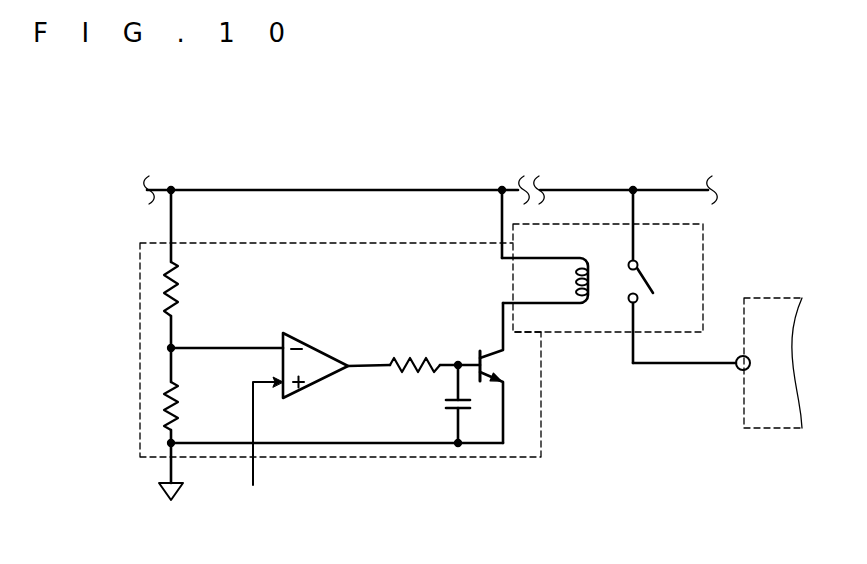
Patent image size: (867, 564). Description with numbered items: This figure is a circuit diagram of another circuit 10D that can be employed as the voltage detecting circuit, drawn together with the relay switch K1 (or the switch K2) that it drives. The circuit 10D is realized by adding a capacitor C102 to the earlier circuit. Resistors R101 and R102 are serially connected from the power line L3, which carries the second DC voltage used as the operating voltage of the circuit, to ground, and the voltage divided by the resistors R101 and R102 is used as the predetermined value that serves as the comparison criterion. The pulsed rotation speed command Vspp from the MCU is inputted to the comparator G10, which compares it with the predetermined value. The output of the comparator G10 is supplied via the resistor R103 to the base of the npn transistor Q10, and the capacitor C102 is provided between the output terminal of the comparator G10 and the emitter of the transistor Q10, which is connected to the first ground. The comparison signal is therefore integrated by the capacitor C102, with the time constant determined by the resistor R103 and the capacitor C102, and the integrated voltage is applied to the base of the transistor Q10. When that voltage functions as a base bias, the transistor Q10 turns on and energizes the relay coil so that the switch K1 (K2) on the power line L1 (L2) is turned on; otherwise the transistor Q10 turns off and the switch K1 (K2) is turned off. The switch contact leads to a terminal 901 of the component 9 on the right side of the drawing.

The power line L3 is at (252, 190).
The power line L1 is at (618, 168).
The power line L2 is at (583, 190).
The circuit 10D is at (541, 413).
The resistor R101 is at (181, 290).
The resistor R102 is at (181, 408).
The resistor R103 is at (422, 340).
The comparator G10 is at (318, 345).
The npn transistor Q10 is at (478, 352).
The capacitor C102 is at (448, 404).
The rotation speed command Vspp is at (259, 449).
The switch K1 is at (662, 276).
The switch K2 is at (703, 232).
The terminal 901 is at (741, 371).
The load 9 is at (776, 298).